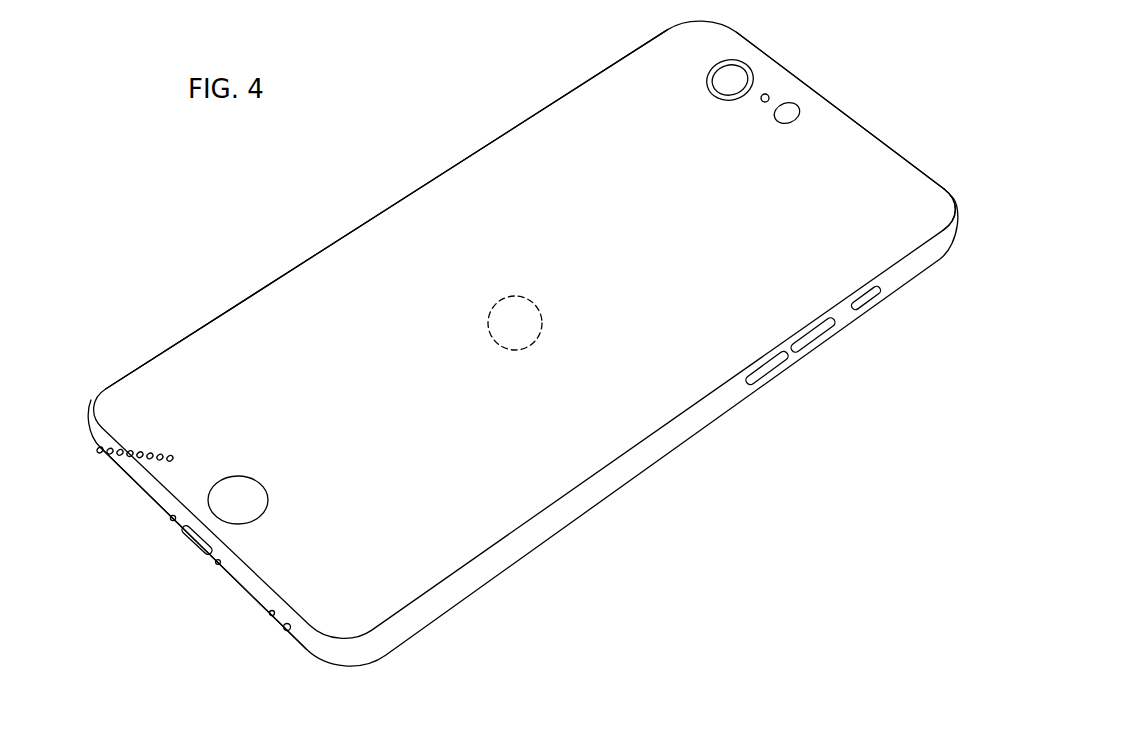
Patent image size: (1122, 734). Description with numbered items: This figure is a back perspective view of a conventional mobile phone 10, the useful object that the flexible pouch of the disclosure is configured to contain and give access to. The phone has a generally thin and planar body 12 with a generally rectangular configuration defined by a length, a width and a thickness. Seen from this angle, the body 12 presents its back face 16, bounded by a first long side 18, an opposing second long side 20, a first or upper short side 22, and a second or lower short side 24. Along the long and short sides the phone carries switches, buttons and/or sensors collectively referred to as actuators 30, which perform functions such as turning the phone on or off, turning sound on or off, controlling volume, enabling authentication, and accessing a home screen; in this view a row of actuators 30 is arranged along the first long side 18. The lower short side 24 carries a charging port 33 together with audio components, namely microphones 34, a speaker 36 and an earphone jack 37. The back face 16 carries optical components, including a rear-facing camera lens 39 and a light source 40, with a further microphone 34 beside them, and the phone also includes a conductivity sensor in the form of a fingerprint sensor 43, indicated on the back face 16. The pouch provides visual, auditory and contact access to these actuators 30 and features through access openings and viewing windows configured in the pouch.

The mobile phone 10 is at (742, 490).
The body 12 is at (332, 175).
The back face 16 is at (897, 190).
The first long side 18 is at (572, 505).
The second long side 20 is at (493, 133).
The first short side 22 is at (880, 138).
The second short side 24 is at (240, 586).
The actuators 30 is at (767, 370).
The charging port 33 is at (195, 538).
The microphones 34 is at (770, 95).
The speaker 36 is at (127, 477).
The earphone jack 37 is at (283, 630).
The rear-facing camera lens 39 is at (745, 68).
The light source 40 is at (800, 108).
The fingerprint sensor 43 is at (490, 313).